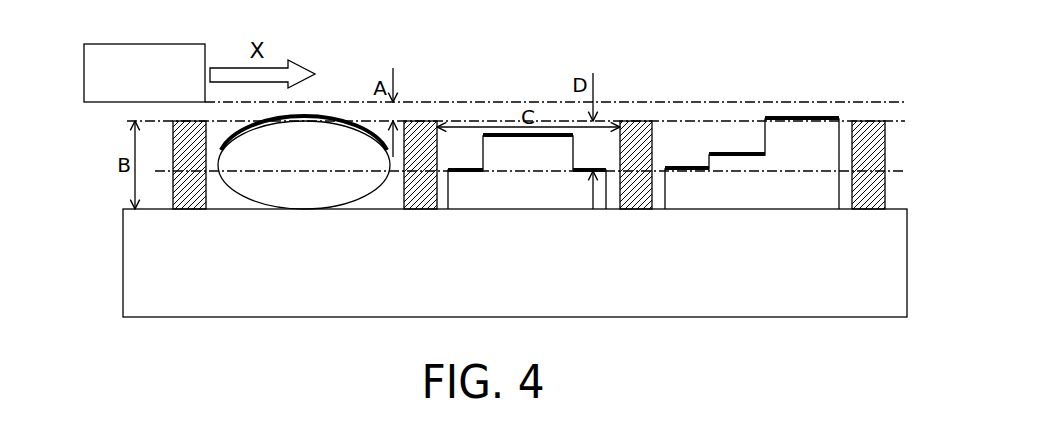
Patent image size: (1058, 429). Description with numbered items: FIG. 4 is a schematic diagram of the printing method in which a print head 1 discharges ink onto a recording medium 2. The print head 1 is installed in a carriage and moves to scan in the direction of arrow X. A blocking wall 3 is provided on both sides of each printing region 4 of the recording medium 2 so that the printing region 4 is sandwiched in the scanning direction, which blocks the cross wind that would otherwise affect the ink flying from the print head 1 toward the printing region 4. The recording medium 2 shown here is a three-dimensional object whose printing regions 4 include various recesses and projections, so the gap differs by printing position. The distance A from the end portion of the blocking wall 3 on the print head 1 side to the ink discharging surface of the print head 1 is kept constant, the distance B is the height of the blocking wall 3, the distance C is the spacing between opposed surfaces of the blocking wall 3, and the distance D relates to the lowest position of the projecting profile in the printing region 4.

The print head 1 is at (143, 48).
The recording medium 2 is at (304, 196).
The blocking wall 3 is at (418, 121).
The printing region 4 is at (354, 121).